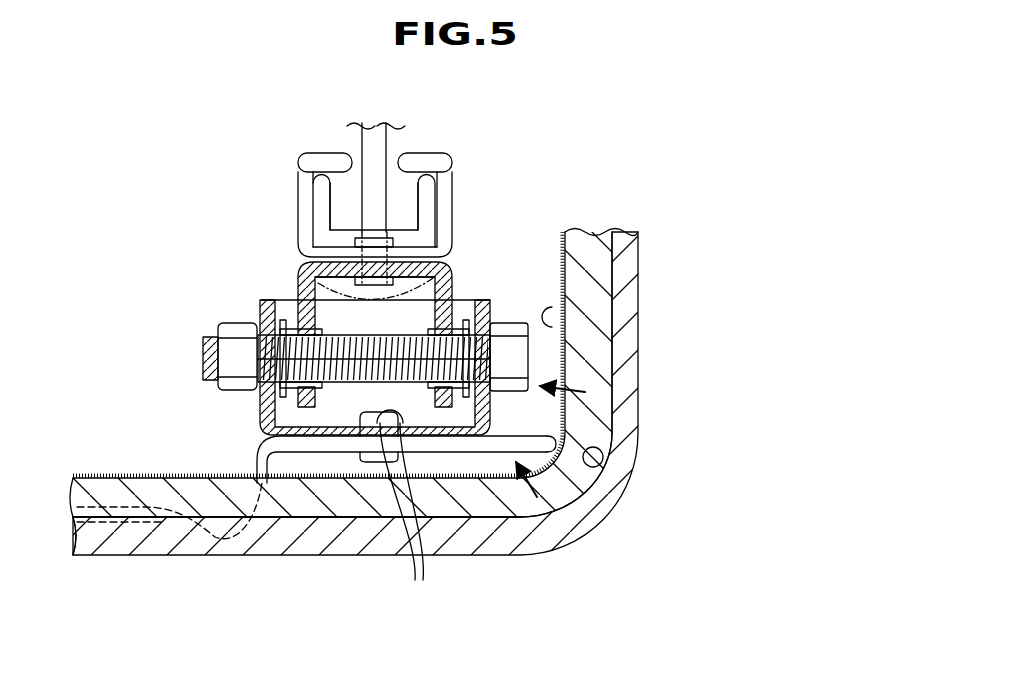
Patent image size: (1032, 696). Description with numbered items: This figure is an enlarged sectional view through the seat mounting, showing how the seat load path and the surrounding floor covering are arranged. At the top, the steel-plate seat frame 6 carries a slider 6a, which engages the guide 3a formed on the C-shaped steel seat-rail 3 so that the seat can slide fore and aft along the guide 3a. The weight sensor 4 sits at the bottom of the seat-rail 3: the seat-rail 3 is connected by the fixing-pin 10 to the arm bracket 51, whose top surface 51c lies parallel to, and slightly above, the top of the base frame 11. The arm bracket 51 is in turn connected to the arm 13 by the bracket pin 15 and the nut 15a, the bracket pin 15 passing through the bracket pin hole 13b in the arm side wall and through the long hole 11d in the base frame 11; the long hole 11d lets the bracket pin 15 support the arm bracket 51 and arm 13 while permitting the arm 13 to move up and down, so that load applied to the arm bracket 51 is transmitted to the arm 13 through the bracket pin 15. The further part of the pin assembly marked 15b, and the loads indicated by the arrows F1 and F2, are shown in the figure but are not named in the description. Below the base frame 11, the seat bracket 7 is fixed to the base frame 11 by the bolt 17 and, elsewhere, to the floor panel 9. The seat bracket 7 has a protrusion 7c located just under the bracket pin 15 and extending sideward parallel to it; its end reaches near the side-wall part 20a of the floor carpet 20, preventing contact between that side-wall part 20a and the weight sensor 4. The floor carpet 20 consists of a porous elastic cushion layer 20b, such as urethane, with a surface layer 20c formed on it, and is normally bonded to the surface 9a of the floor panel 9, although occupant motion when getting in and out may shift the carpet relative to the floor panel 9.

The seat frame 6 is at (357, 140).
The slider 6a is at (423, 168).
The seat-rail 3 is at (440, 178).
The guide 3a is at (428, 203).
The arm bracket 51 is at (298, 247).
The top surface 51c is at (330, 245).
The arm 13 is at (306, 300).
The fixing-pin 10 is at (437, 268).
The weight sensor 4 is at (518, 305).
The bracket pin 15 is at (513, 360).
The nut 15a is at (240, 330).
The bracket pin flange 15b is at (262, 378).
The bracket pin hole 13b is at (205, 353).
The long hole 11d is at (280, 345).
The base frame 11 is at (260, 413).
The seat bracket 7 is at (262, 470).
The protrusion 7c is at (560, 470).
The bolt 17 is at (400, 512).
The floor carpet 20 is at (585, 365).
The side-wall part 20a is at (590, 270).
The cushion layer 20b is at (608, 300).
The surface layer 20c is at (590, 325).
The floor panel 9 is at (620, 440).
The surface 9a is at (600, 465).
The force F1 is at (537, 497).
The force F2 is at (585, 392).